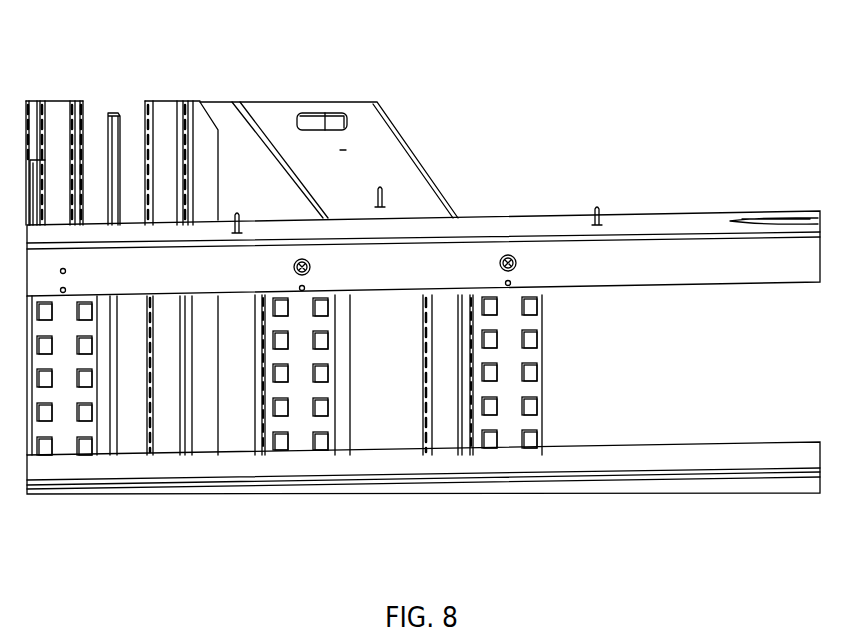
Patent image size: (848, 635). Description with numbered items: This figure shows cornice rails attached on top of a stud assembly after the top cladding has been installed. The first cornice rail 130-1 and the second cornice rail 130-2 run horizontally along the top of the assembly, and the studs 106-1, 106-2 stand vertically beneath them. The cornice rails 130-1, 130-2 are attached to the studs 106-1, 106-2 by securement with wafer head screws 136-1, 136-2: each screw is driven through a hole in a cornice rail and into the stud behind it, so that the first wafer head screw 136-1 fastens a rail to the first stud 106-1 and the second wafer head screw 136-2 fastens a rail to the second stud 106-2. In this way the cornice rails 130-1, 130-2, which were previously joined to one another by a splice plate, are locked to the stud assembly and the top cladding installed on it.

The cornice rail 130-1 is at (95, 222).
The cornice rail 130-2 is at (407, 140).
The wafer head screw 136-1 is at (298, 258).
The wafer head screw 136-2 is at (510, 256).
The stud 106-1 is at (252, 424).
The stud 106-2 is at (540, 417).